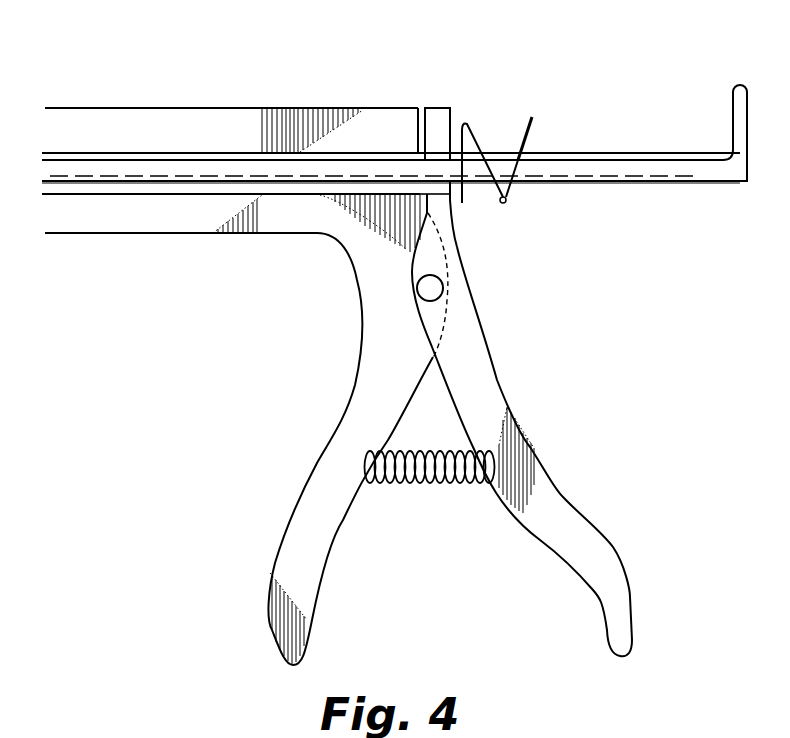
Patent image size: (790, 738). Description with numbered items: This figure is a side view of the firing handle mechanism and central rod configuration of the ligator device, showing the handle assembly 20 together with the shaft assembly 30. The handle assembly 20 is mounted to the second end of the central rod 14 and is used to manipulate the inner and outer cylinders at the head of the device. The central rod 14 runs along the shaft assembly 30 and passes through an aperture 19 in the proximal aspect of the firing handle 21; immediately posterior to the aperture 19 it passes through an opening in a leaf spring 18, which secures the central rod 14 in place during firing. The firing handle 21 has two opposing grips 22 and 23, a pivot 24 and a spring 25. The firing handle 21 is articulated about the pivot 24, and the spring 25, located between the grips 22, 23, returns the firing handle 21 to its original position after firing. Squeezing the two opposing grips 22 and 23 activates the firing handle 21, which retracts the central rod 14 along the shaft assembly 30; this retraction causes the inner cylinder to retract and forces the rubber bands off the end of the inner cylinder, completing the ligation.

The central rod 14 is at (168, 176).
The leaf spring 18 is at (538, 130).
The aperture 19 is at (440, 151).
The handle assembly 20 is at (654, 193).
The firing handle 21 is at (447, 221).
The grip 22 is at (500, 392).
The grip 23 is at (348, 452).
The pivot 24 is at (440, 290).
The spring 25 is at (424, 494).
The shaft assembly 30 is at (42, 75).